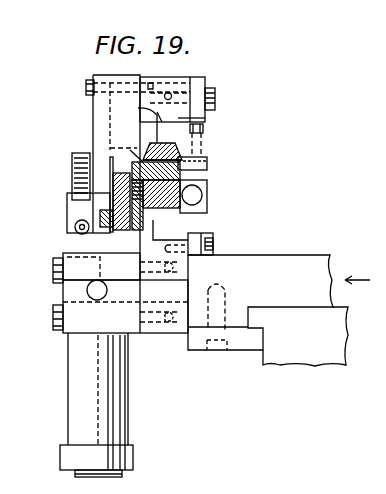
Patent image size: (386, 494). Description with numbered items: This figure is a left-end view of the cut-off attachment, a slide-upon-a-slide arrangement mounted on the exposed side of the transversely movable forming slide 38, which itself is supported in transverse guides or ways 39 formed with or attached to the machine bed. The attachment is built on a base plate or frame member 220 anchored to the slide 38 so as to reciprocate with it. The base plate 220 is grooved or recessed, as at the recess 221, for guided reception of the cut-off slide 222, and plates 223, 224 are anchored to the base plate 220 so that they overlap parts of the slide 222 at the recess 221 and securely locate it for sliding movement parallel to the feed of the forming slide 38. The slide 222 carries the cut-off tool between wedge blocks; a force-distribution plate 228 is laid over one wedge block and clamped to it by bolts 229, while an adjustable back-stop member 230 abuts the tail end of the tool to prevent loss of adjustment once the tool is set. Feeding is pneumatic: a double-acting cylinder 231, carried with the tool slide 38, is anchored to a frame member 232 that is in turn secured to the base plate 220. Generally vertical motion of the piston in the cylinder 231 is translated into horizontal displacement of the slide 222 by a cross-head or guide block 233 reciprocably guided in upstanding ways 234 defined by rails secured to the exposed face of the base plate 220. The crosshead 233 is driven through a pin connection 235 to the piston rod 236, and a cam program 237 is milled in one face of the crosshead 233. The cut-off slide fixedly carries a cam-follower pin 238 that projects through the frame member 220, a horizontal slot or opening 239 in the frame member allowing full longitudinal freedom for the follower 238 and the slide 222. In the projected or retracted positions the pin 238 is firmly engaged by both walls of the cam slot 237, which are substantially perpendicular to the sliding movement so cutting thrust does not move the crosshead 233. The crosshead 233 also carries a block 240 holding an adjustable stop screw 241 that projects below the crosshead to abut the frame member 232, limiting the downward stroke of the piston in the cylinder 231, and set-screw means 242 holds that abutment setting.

The forming slide 38 is at (318, 262).
The transverse guides or ways 39 is at (333, 347).
The base plate or frame member 220 is at (162, 300).
The recess 221 is at (141, 204).
The cut-off slide 222 is at (181, 118).
The plate 223 is at (205, 86).
The plate 224 is at (211, 244).
The force-distribution plate 228 is at (207, 166).
The bolts 229 is at (204, 129).
The adjustable back-stop member 230 is at (207, 194).
The double-acting cylinder 231 is at (68, 394).
The frame member 232 is at (78, 333).
The cross-head or guide block 233 is at (110, 150).
The upstanding ways 234 is at (114, 102).
The pin connection 235 is at (140, 220).
The piston rod 236 is at (70, 193).
The cam program 237 is at (143, 205).
The cam-follower pin 238 is at (184, 150).
The horizontal slot or opening 239 is at (145, 148).
The block 240 is at (68, 249).
The adjustable stop screw 241 is at (72, 162).
The set-screw means 242 is at (75, 226).